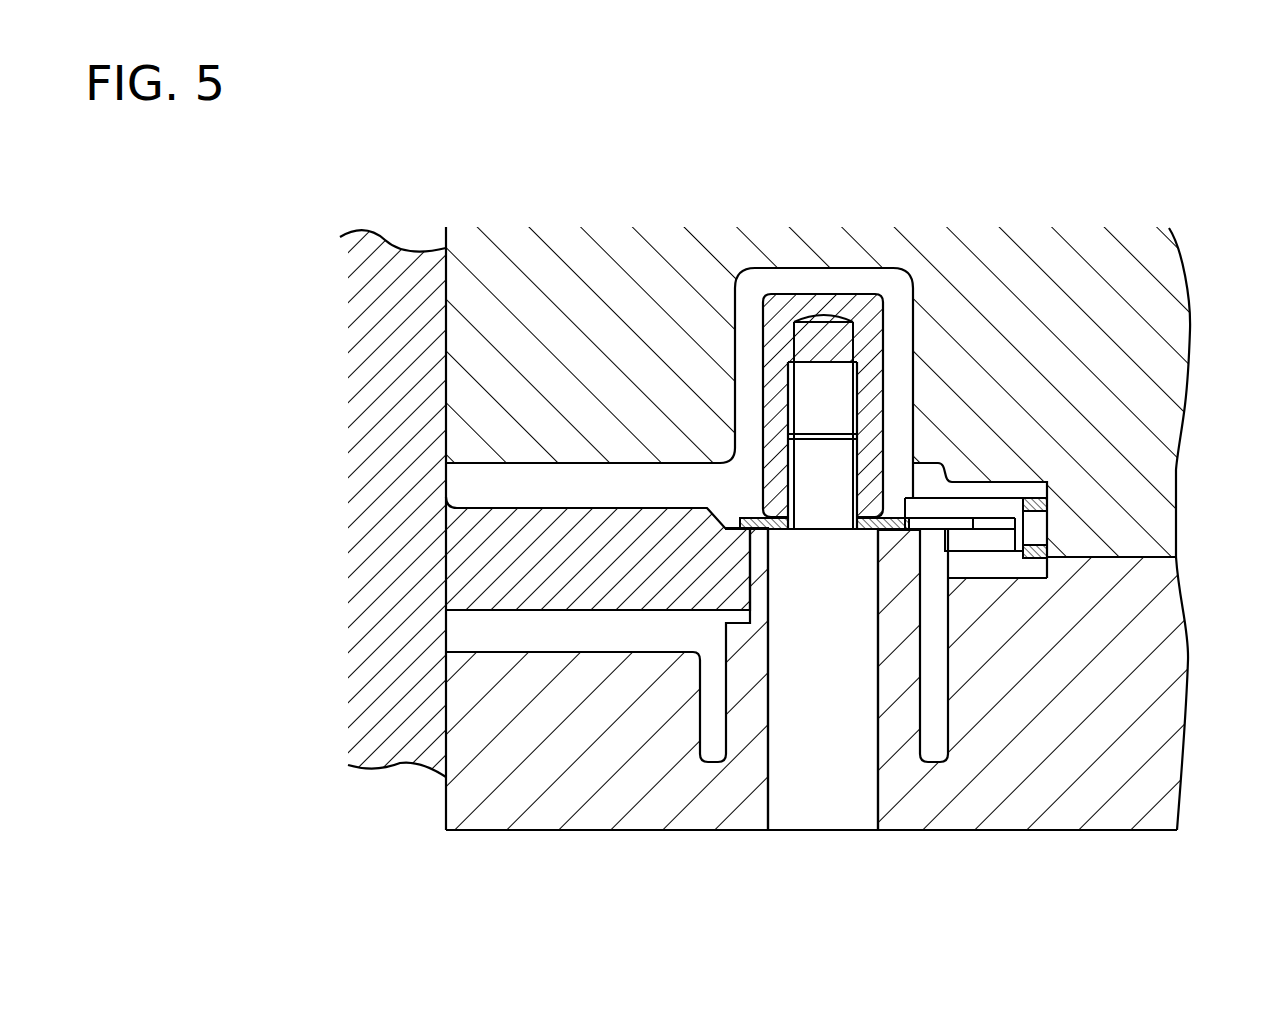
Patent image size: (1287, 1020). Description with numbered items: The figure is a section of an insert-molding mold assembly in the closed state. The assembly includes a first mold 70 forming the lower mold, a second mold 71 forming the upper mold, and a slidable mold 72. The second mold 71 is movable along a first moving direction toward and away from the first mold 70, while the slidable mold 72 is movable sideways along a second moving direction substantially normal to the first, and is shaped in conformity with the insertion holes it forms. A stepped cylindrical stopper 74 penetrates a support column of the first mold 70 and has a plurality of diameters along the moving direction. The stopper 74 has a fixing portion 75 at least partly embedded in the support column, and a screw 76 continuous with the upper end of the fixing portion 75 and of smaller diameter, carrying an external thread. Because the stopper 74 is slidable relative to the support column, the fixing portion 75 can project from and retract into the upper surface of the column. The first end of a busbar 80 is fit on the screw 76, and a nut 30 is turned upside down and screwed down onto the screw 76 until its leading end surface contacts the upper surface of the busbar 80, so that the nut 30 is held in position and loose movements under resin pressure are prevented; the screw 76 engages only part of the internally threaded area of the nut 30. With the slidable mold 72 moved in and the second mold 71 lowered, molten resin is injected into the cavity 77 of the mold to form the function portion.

The nut 30 is at (873, 318).
The first mold 70 is at (1155, 672).
The second mold 71 is at (1165, 388).
The slidable mold 72 is at (640, 583).
The stopper 74 is at (830, 833).
The fixing portion 75 is at (843, 735).
The screw 76 is at (835, 459).
The cavity 77 is at (1047, 490).
The busbar 80 is at (903, 518).